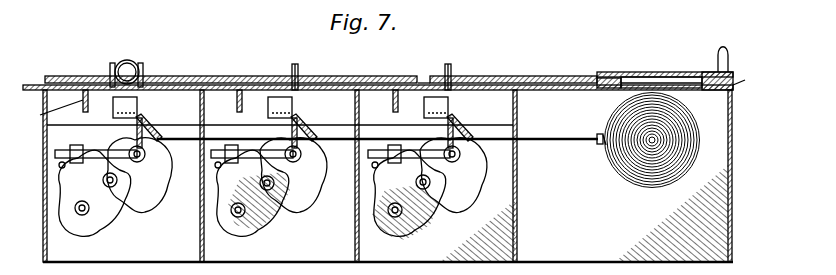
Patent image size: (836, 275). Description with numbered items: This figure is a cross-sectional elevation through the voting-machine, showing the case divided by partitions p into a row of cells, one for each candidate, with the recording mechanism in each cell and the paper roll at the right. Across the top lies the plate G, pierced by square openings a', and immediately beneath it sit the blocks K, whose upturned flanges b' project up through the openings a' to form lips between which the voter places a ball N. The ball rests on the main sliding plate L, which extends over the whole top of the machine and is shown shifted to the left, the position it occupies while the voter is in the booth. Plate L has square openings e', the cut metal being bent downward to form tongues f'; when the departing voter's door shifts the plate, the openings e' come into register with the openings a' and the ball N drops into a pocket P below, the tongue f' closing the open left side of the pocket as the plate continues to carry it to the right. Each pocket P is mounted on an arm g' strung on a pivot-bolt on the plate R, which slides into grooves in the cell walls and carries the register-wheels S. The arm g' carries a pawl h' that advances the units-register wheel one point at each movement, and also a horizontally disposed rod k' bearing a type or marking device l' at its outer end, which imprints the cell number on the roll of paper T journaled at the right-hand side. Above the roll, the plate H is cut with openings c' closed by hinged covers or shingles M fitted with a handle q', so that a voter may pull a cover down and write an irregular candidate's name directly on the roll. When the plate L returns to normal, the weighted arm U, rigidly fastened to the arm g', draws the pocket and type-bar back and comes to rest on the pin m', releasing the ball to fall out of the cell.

The sliding plate L is at (30, 85).
The ball N is at (130, 62).
The plate G is at (170, 77).
The openings a' is at (363, 66).
The upturned flanges b' is at (393, 66).
The blocks K is at (372, 85).
The covers or shingles M is at (665, 65).
The openings c' is at (661, 66).
The handle q' is at (737, 57).
The plate H is at (747, 77).
The tongues f' is at (203, 110).
The square openings e' is at (250, 101).
The pockets P is at (128, 105).
The arms g' is at (295, 124).
The pawls h' is at (317, 119).
The rods k' is at (377, 123).
The type or marking device l' is at (592, 125).
The weighted arm U is at (257, 144).
The pin m' is at (86, 194).
The partitions p is at (196, 180).
The plate R is at (105, 193).
The register-wheels S is at (466, 196).
The roll of paper T is at (636, 180).